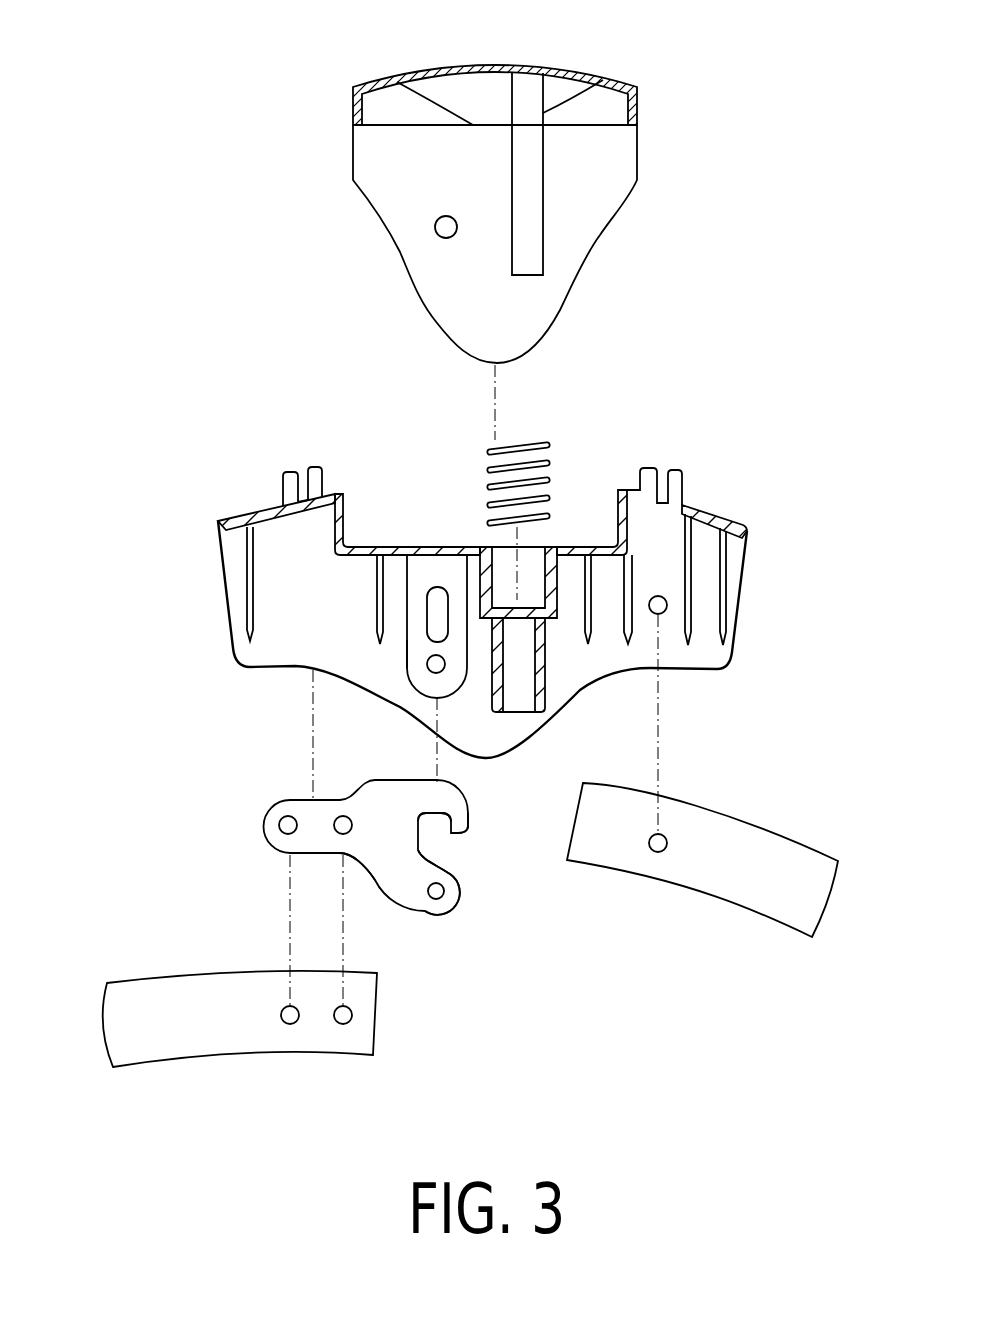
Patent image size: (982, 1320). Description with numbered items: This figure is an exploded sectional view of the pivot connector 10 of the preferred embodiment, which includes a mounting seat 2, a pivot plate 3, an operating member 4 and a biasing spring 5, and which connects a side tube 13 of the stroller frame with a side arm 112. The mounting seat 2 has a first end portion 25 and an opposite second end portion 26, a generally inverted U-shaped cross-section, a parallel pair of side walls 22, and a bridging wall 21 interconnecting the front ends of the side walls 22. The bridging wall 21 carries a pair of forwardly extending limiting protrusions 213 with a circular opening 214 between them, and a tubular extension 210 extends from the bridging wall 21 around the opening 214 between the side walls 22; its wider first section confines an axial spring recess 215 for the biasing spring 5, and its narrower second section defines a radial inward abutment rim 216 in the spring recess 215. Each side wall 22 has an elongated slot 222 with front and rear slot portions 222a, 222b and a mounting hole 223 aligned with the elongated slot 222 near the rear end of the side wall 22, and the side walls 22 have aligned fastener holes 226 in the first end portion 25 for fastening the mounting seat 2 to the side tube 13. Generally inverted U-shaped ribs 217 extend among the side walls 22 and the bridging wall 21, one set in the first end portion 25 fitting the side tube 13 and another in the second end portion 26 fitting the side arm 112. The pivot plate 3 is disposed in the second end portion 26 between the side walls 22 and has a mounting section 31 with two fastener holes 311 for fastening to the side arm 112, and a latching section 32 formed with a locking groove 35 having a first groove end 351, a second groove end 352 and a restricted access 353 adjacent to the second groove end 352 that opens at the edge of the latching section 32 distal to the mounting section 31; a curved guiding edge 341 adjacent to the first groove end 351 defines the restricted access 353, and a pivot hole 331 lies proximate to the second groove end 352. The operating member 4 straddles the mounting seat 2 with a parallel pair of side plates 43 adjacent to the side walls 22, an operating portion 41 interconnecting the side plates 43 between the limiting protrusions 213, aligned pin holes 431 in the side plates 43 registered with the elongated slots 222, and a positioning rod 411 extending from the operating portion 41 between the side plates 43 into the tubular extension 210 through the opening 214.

The pivot connector 10 is at (192, 466).
The operating member 4 is at (650, 175).
The operating portion 41 is at (557, 67).
The positioning rod 411 is at (527, 222).
The side plates 43 is at (547, 320).
The pin holes 431 is at (435, 227).
The biasing spring 5 is at (520, 442).
The mounting seat 2 is at (722, 500).
The bridging wall 21 is at (407, 545).
The limiting protrusions 213 is at (320, 470).
The ribs 217 is at (277, 502).
The circular opening 214 is at (528, 553).
The radial inward abutment rim 216 is at (547, 623).
The tubular extension 210 is at (545, 693).
The axial spring recess 215 is at (540, 587).
The fastener holes 226 is at (668, 603).
The first end portion 25 is at (745, 557).
The second end portion 26 is at (270, 602).
The side walls 22 is at (723, 670).
The elongated slot 222 is at (433, 613).
The front slot portion 222a is at (436, 597).
The rear slot portion 222b is at (427, 667).
The mounting hole 223 is at (407, 640).
The pivot plate 3 is at (442, 942).
The mounting section 31 is at (275, 840).
The fastener holes 311 is at (279, 826).
The latching section 32 is at (407, 862).
The locking groove 35 is at (408, 795).
The first groove end 351 is at (433, 820).
The curved guiding edge 341 is at (468, 827).
The second groove end 352 is at (445, 865).
The restricted access 353 is at (462, 857).
The pivot hole 331 is at (436, 891).
The side tube 13 is at (690, 877).
The side arm 112 is at (242, 1028).